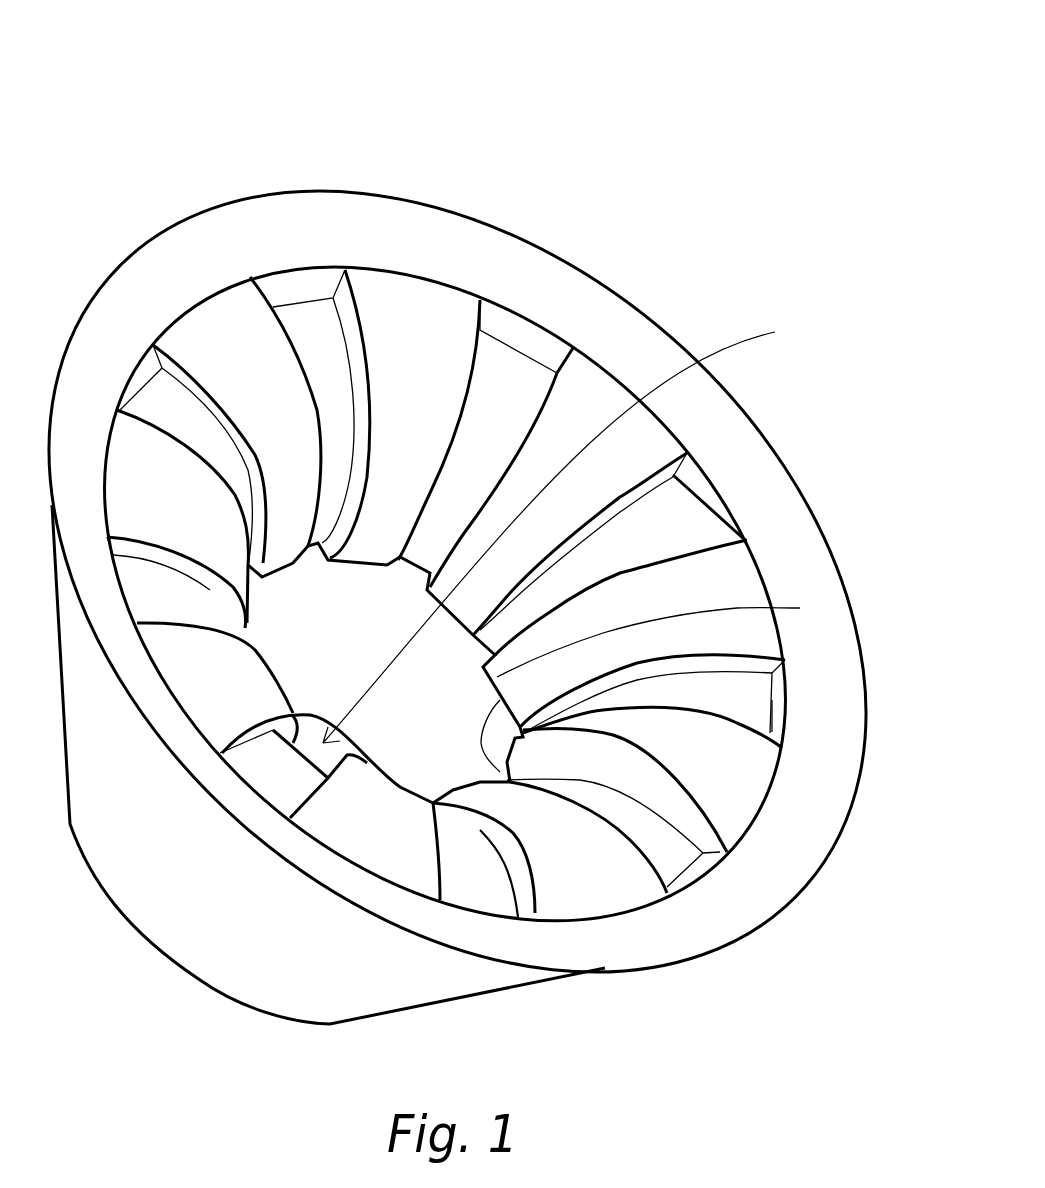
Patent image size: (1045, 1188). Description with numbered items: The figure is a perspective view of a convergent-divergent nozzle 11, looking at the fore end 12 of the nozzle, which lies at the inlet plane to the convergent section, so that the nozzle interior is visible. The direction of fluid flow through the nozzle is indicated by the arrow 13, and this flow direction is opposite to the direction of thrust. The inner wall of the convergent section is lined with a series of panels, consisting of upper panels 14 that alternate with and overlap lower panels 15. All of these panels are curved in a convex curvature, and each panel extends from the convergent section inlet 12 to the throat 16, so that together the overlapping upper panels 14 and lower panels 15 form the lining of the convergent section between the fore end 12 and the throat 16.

The convergent-divergent nozzle 11 is at (128, 113).
The fore end 12 is at (805, 560).
The arrow 13 is at (722, 347).
The upper panels 14 is at (422, 307).
The lower panels 15 is at (520, 373).
The throat 16 is at (800, 608).